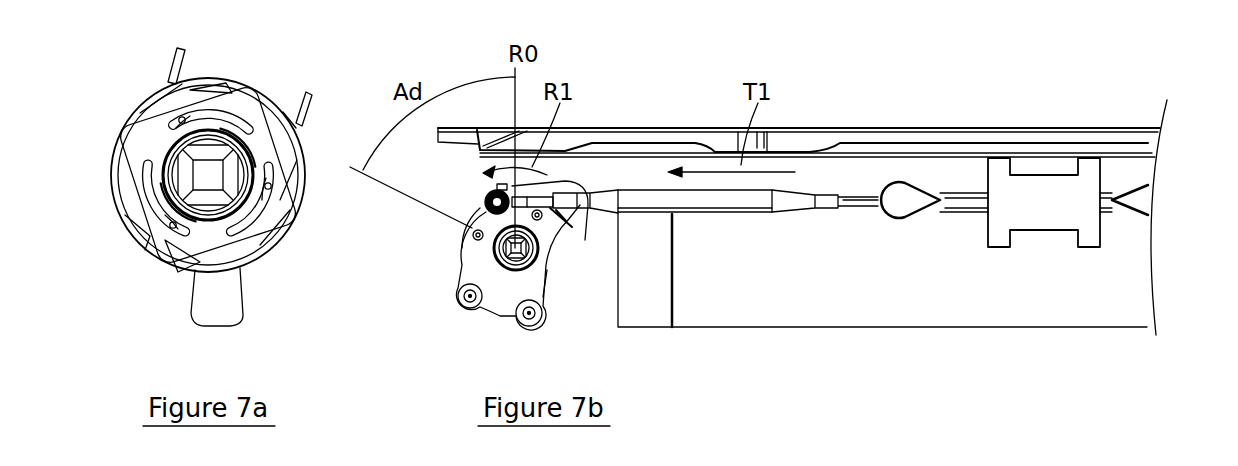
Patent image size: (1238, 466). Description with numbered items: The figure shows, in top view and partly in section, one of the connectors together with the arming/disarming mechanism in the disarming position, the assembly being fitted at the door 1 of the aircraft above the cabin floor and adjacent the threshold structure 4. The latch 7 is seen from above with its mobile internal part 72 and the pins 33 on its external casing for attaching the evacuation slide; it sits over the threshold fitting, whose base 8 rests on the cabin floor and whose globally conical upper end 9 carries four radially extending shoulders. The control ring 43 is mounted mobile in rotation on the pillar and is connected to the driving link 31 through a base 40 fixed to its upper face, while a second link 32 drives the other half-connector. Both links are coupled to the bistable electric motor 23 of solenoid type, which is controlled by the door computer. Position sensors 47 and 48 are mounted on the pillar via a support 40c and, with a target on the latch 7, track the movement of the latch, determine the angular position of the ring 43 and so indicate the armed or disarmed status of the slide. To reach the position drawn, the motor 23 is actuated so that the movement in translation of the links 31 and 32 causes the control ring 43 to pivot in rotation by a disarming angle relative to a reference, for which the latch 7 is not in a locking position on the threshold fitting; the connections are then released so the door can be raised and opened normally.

In FIG. 7B, the vehicle body / roof plate 1 is at (1118, 136).
In FIG. 7B, the frame 4 is at (922, 310).
In FIG. 7A, the latch 7 is at (292, 175).
In FIG. 7A, the base 8 is at (135, 147).
In FIG. 7A, the upper end 9 is at (182, 171).
In FIG. 7B, the upper end 9 is at (496, 263).
In FIG. 7B, the bistable electric motor 23 is at (1052, 222).
In FIG. 7B, the driving link 31 is at (758, 240).
In FIG. 7B, the link 32 is at (1112, 190).
In FIG. 7A, the pins 33 is at (190, 47).
In FIG. 7B, the pins 33 is at (548, 207).
In FIG. 7B, the base 40 is at (478, 213).
In FIG. 7B, the support 40c is at (530, 293).
In FIG. 7A, the control ring 43 is at (137, 252).
In FIG. 7B, the control ring 43 is at (466, 265).
In FIG. 7B, the position sensor 47 is at (468, 308).
In FIG. 7B, the position sensor 48 is at (540, 318).
In FIG. 7A, the mobile internal part 72 is at (247, 298).